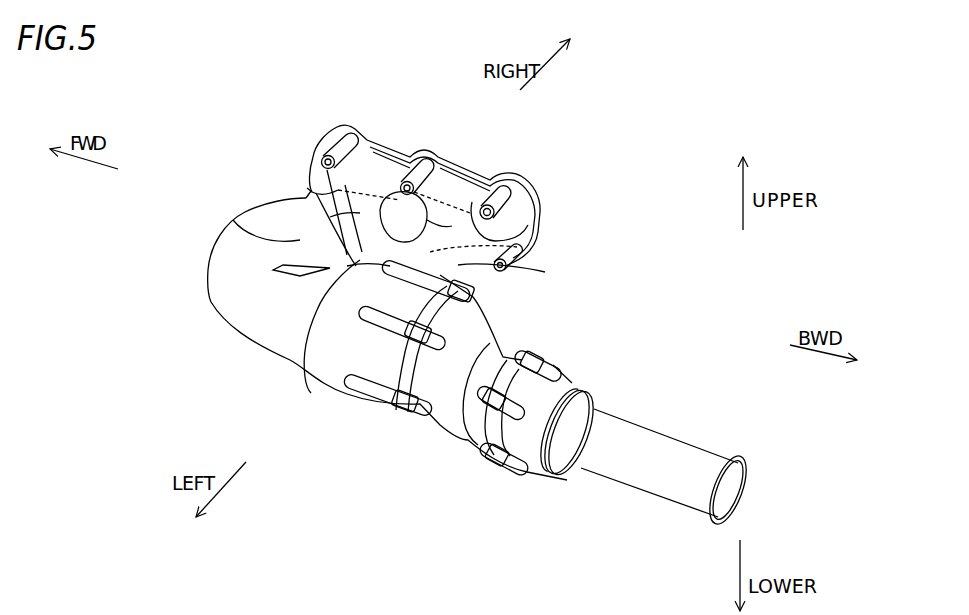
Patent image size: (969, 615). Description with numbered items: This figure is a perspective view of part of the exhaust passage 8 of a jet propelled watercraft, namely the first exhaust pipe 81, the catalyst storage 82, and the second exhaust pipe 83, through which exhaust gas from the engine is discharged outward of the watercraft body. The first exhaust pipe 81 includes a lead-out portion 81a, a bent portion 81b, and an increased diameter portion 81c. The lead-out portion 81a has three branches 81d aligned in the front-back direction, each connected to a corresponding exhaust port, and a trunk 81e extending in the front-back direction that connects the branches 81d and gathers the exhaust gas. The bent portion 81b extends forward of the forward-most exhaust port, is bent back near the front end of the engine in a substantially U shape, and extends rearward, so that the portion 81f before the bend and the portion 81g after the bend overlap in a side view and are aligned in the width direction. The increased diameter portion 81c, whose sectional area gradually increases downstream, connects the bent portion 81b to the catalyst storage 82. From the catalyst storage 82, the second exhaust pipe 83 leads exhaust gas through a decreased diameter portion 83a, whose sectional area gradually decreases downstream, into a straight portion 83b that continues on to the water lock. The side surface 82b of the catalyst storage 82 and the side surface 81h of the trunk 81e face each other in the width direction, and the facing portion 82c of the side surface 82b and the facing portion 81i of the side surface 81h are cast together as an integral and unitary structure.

The exhaust passage 8 is at (614, 168).
The first exhaust pipe 81 is at (550, 150).
The lead-out portion 81a is at (373, 138).
The bent portion 81b is at (214, 236).
The increased diameter portion 81c is at (276, 310).
The branches 81d is at (320, 186).
The trunk 81e is at (512, 270).
The portion of the bent portion before being bent 81f is at (273, 238).
The portion of the bent portion after being bent 81g is at (238, 303).
The side surface of the trunk 81h is at (381, 247).
The portion of the side surface of the trunk 81i is at (352, 160).
The catalyst storage 82 is at (338, 357).
The side surface of the catalyst storage 82b is at (346, 276).
The portion of the side surface of the catalyst storage 82c is at (307, 188).
The second exhaust pipe 83 is at (566, 360).
The decreased diameter portion 83a is at (440, 398).
The straight portion 83b is at (527, 447).